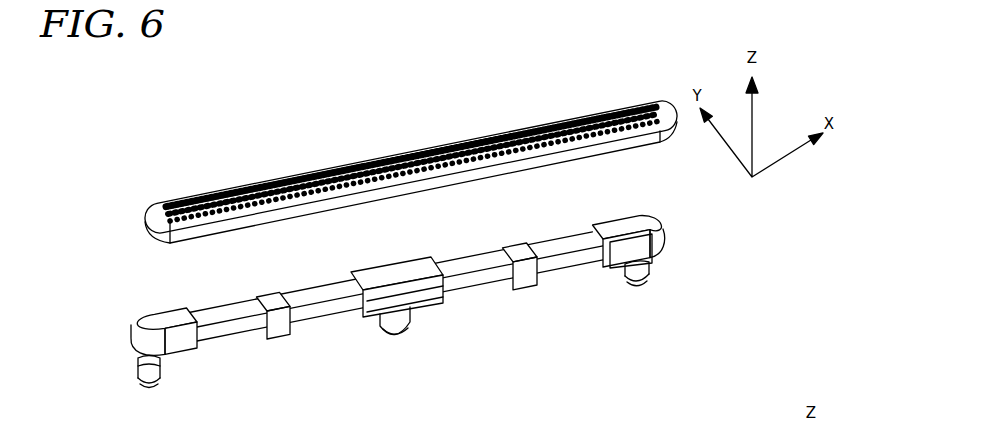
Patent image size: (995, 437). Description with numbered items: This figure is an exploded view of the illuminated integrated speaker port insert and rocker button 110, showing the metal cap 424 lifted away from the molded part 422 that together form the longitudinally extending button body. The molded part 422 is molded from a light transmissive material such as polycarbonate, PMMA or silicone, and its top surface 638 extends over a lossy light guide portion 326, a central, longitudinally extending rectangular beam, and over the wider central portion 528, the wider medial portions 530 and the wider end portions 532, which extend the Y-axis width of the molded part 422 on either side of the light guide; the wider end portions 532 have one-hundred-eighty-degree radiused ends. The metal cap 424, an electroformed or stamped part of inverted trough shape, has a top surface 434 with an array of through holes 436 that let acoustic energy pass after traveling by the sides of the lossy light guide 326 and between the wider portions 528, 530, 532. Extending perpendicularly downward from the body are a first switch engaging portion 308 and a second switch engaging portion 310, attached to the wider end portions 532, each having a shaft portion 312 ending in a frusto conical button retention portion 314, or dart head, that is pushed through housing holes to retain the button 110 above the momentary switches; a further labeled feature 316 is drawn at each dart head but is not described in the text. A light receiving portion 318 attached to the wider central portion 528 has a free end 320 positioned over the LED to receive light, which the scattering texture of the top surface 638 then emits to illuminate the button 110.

The illuminated integrated speaker port insert and rocker button 110 is at (390, 297).
The first switch engaging portion 308 is at (143, 361).
The second switch engaging portion 310 is at (651, 266).
The shaft portion 312 is at (160, 360).
The frusto conical button retention portion (dart head) 314 is at (147, 383).
The spacer 316 is at (160, 378).
The light receiving portion 318 is at (389, 318).
The free end 320 is at (416, 337).
The lossy light guide portion 326 is at (323, 296).
The molded part 422 is at (226, 323).
The metal cap 424 is at (233, 210).
The top surface of the metal cap 434 is at (346, 163).
The through holes 436 is at (413, 146).
The wider central portion 528 is at (404, 283).
The wider medial portions 530 is at (277, 313).
The wider end portions 532 is at (180, 337).
The top surface of the molded part 638 is at (373, 283).